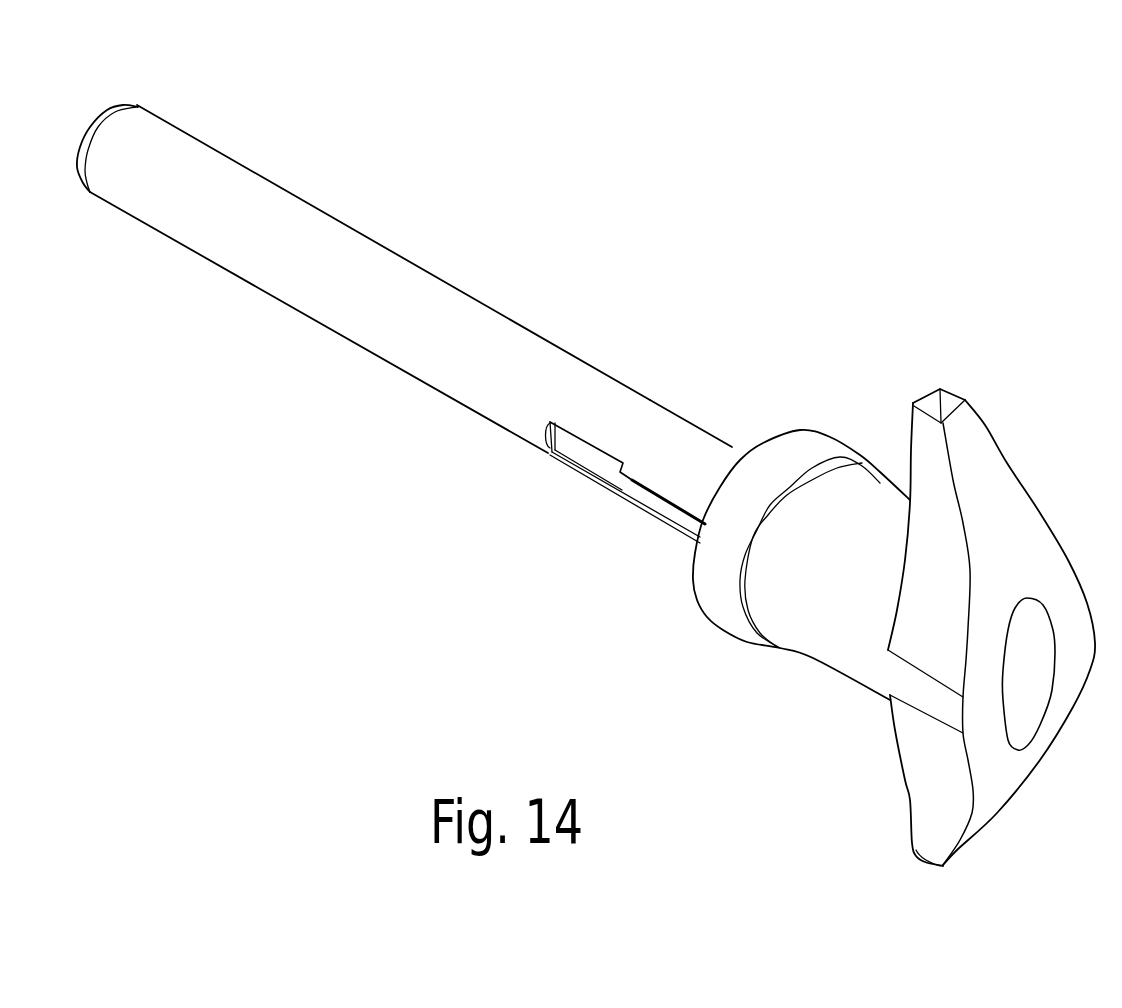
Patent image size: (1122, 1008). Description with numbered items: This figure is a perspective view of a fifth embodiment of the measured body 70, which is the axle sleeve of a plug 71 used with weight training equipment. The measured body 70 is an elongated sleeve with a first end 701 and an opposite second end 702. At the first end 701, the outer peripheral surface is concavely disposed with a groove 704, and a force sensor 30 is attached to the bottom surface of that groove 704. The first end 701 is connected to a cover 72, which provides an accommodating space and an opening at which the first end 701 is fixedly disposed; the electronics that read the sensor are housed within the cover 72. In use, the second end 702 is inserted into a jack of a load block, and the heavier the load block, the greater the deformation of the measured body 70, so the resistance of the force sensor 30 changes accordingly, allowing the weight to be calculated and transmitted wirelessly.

The measured body 70 is at (457, 310).
The second end 702 is at (132, 140).
The first end 701 is at (705, 458).
The groove 704 is at (550, 453).
The force sensor 30 is at (597, 462).
The cover 72 is at (837, 625).
The plug 71 is at (833, 282).